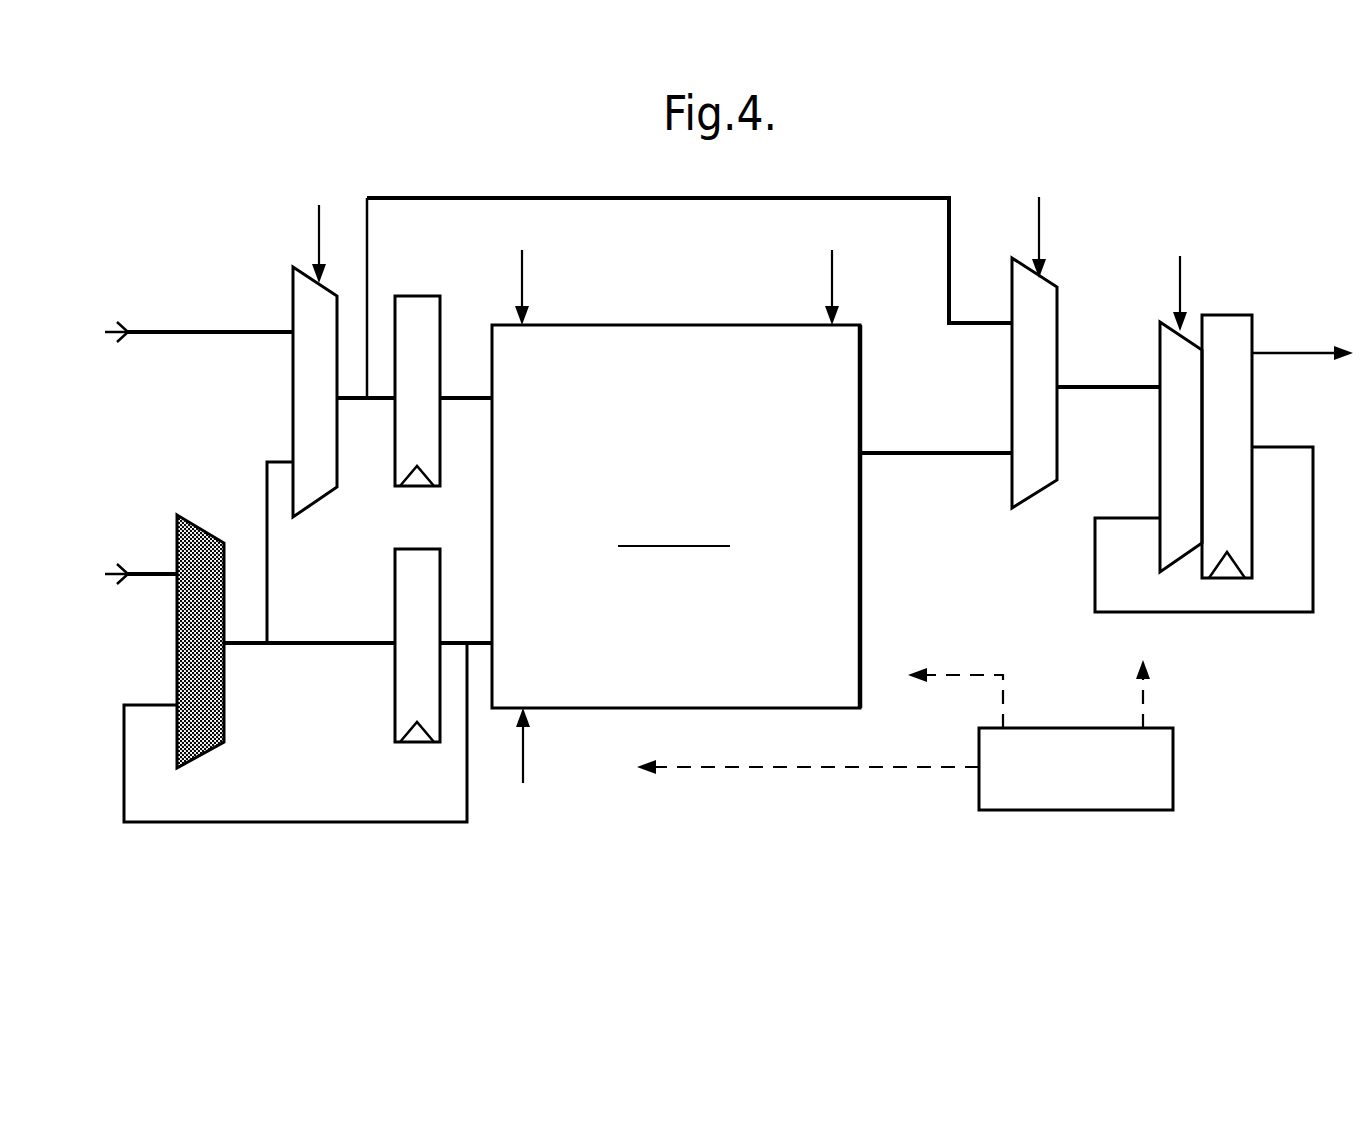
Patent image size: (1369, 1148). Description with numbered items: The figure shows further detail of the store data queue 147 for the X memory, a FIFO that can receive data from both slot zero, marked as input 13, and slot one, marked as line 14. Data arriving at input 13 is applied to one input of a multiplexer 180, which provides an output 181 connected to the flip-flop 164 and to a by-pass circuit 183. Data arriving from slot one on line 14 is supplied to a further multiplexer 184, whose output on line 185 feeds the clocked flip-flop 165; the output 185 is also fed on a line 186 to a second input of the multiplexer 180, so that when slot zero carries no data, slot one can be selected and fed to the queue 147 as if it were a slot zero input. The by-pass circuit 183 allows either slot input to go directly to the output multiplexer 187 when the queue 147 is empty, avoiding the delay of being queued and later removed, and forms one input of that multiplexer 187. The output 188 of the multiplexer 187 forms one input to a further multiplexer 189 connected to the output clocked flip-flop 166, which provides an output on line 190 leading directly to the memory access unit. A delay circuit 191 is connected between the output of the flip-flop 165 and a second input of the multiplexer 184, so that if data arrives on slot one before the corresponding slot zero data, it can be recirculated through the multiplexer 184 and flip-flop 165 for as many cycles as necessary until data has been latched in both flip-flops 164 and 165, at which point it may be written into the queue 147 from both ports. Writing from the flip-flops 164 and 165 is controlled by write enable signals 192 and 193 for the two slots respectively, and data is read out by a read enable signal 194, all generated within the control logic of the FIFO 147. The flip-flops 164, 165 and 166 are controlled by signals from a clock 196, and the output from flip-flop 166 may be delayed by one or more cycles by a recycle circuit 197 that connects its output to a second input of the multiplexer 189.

The slot 0 input 13 is at (155, 335).
The slot 1 input 14 is at (155, 577).
The store data queue 147 is at (660, 326).
The flip-flop 164 is at (437, 462).
The clocked flip-flop 165 is at (415, 743).
The output clocked flip-flop 166 is at (1232, 318).
The multiplexer 180 is at (293, 418).
The output of multiplexer 180 181 is at (367, 398).
The by-pass circuit 183 is at (608, 198).
The further multiplexer 184 is at (224, 707).
The output line of multiplexer 184 185 is at (305, 644).
The line to second input of multiplexer 180 186 is at (267, 585).
The output multiplexer 187 is at (1060, 304).
The output of multiplexer 187 188 is at (1080, 388).
The further multiplexer 189 is at (1160, 363).
The output line 190 is at (1278, 355).
The delay circuit 191 is at (308, 822).
The write enable signal for slot 0 192 is at (522, 293).
The write enable signal for slot 1 193 is at (523, 766).
The read enable signal 194 is at (832, 293).
The clock 196 is at (1173, 768).
The recycle circuit 197 is at (1313, 537).